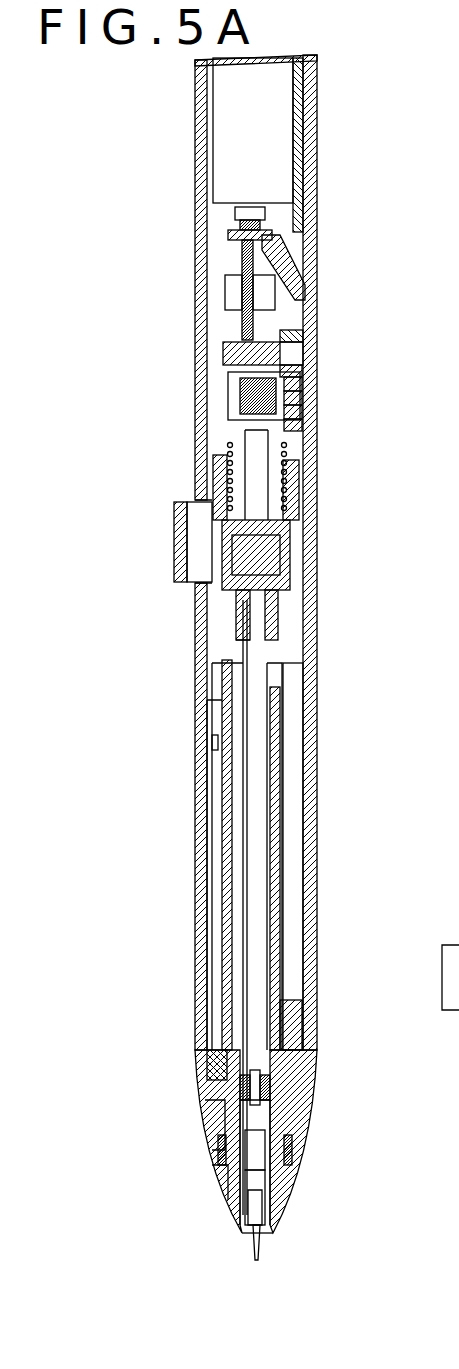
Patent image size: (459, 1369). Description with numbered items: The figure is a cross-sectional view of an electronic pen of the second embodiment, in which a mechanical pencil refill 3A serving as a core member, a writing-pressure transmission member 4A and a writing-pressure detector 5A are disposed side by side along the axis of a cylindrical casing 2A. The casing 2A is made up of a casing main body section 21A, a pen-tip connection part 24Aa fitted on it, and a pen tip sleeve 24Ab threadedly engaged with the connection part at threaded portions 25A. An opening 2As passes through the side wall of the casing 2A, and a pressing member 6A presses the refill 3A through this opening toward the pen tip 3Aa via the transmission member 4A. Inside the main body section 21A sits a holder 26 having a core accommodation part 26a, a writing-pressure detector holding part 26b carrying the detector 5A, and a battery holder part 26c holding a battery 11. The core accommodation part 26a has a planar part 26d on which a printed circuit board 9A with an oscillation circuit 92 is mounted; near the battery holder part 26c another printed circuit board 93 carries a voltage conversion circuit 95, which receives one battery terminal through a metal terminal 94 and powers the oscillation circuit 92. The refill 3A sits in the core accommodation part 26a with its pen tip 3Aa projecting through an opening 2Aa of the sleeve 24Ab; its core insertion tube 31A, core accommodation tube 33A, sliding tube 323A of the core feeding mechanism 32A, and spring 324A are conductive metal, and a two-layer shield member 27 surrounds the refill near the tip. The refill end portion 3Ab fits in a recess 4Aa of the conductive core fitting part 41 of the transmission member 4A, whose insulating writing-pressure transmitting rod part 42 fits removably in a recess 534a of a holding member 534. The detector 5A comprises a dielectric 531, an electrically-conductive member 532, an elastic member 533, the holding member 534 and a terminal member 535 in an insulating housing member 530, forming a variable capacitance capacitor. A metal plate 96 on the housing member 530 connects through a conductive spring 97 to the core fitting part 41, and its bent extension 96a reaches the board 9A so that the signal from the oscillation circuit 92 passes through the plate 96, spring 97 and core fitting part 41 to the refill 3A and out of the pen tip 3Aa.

The battery 11 is at (283, 122).
The holder 26 is at (303, 677).
The core accommodation part 26a is at (290, 752).
The writing-pressure detector holding part 26b is at (305, 428).
The battery holder part 26c is at (305, 156).
The planar part 26d is at (240, 975).
The casing 2A is at (112, 1045).
The casing main body section 21A is at (215, 1058).
The pen-tip connection part 24Aa is at (213, 1128).
The threaded portions 25A is at (215, 1160).
The pen tip sleeve 24Ab is at (212, 1178).
The opening 2Aa is at (245, 1232).
The opening 2As is at (200, 500).
The metal terminal 94 is at (237, 234).
The voltage conversion circuit 95 is at (232, 292).
The printed circuit board 93 is at (262, 312).
The housing member 530 is at (238, 378).
The terminal member 535 is at (292, 322).
The dielectric 531 is at (292, 352).
The elastic member 533 is at (292, 385).
The electrically-conductive member 532 is at (292, 412).
The holding member 534 is at (294, 438).
The recess 534a is at (296, 460).
The writing-pressure detector 5A is at (217, 412).
The metal plate 96 is at (218, 465).
The extension 96a is at (225, 645).
The spring 97 is at (295, 505).
The pressing member 6A is at (164, 542).
The writing-pressure transmission member 4A is at (388, 535).
The core fitting part 41 is at (304, 561).
The writing-pressure transmitting rod part 42 is at (292, 545).
The recess 4Aa is at (277, 620).
The end portion 3Ab is at (238, 616).
The printed circuit board 9A is at (226, 935).
The oscillation circuit 92 is at (212, 742).
The mechanical pencil refill 3A is at (278, 905).
The sliding tube 323A is at (282, 980).
The core feeding mechanism 32A is at (292, 1085).
The spring 324A is at (288, 1108).
The core accommodation tube 33A is at (290, 1145).
The core insertion tube 31A is at (278, 1182).
The shield member 27 is at (264, 1205).
The pen tip 3Aa is at (259, 1250).